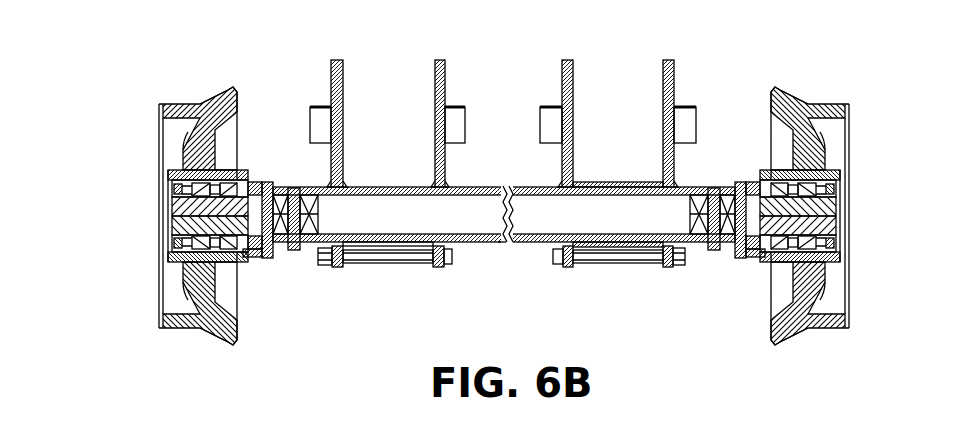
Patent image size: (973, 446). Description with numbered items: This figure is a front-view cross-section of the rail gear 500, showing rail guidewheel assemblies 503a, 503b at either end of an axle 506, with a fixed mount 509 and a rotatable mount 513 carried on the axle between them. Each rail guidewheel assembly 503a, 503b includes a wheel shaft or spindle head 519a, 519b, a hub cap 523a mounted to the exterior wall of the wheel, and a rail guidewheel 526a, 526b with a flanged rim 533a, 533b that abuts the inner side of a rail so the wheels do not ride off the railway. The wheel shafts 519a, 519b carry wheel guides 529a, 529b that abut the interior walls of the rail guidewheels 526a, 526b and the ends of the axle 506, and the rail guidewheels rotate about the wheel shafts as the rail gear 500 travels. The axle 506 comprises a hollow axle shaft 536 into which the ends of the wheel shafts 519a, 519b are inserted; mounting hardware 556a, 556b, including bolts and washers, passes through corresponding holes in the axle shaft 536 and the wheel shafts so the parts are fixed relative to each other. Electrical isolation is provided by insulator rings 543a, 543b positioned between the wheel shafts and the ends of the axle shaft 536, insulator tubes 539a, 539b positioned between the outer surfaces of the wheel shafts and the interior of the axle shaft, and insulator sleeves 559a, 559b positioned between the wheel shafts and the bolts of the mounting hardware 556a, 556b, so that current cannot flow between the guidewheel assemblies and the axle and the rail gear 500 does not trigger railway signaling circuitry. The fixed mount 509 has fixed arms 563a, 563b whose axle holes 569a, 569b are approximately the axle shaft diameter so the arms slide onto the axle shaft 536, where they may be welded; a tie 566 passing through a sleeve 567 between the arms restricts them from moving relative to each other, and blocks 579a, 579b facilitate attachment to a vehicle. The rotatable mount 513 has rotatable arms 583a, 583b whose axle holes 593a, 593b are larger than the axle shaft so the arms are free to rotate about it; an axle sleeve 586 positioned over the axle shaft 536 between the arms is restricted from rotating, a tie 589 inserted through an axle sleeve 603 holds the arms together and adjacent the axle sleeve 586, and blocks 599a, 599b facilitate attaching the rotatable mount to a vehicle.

The rail gear 500 is at (712, 341).
The rail guidewheel assembly 503a is at (163, 138).
The rail guidewheel assembly 503b is at (845, 138).
The axle 506 is at (484, 243).
The fixed mount 509 is at (400, 316).
The rotatable mount 513 is at (631, 318).
The wheel shaft 519a is at (178, 220).
The wheel shaft 519b is at (830, 220).
The hub cap 523a is at (176, 190).
The rail guidewheel 526a is at (192, 106).
The rail guidewheel 526b is at (816, 106).
The wheel guide 529a is at (256, 258).
The wheel guide 529b is at (750, 258).
The flanged rim 533a is at (236, 96).
The flanged rim 533b is at (772, 96).
The axle shaft 536 is at (502, 246).
The insulator tube 539a is at (270, 186).
The insulator tube 539b is at (740, 186).
The insulator ring 543a is at (253, 183).
The insulator ring 543b is at (752, 183).
The mounting hardware 556a is at (267, 256).
The mounting hardware 556b is at (715, 252).
The insulator sleeve 559a is at (300, 214).
The insulator sleeve 559b is at (708, 214).
The fixed arm 563a is at (337, 60).
The fixed arm 563b is at (440, 60).
The tie 566 is at (446, 265).
The sleeve 567 is at (392, 263).
The axle hole 569a is at (344, 186).
The axle hole 569b is at (435, 186).
The block 579a is at (322, 118).
The block 579b is at (452, 122).
The rotatable arm 583a is at (567, 60).
The rotatable arm 583b is at (670, 60).
The axle sleeve 586 is at (598, 183).
The tie 589 is at (683, 266).
The axle hole 593a is at (561, 185).
The axle hole 593b is at (662, 185).
The block 599a is at (550, 124).
The block 599b is at (690, 122).
The axle sleeve 603 is at (613, 263).